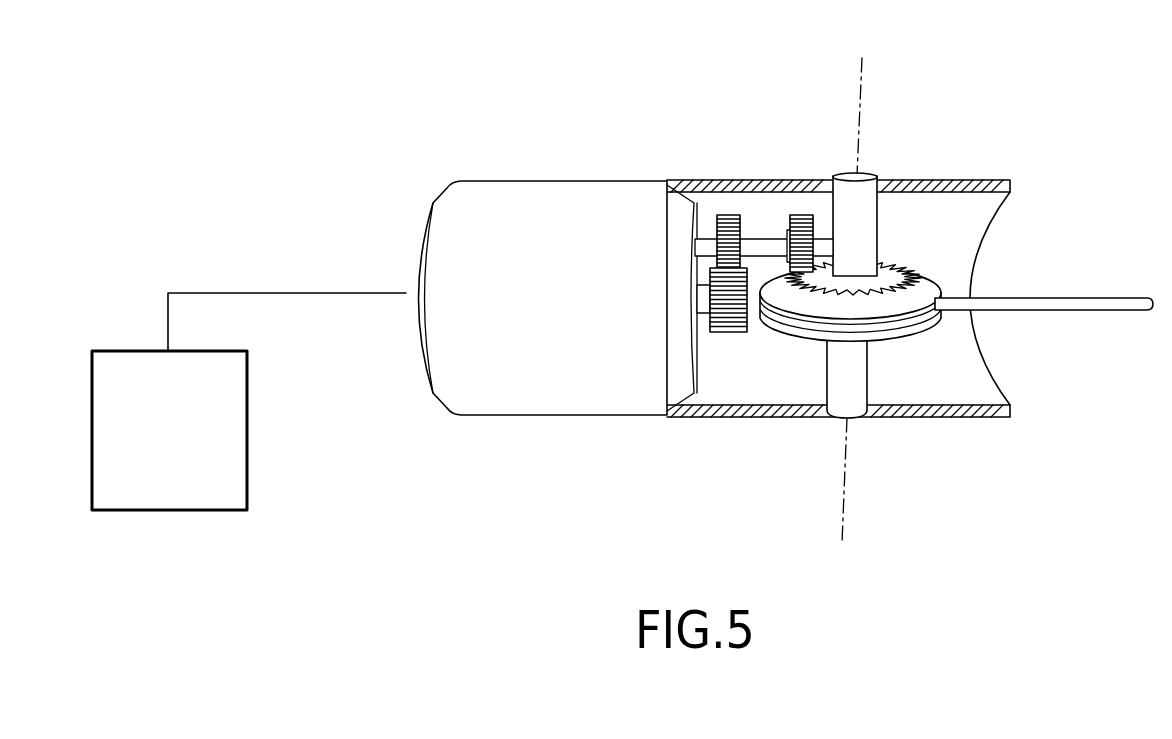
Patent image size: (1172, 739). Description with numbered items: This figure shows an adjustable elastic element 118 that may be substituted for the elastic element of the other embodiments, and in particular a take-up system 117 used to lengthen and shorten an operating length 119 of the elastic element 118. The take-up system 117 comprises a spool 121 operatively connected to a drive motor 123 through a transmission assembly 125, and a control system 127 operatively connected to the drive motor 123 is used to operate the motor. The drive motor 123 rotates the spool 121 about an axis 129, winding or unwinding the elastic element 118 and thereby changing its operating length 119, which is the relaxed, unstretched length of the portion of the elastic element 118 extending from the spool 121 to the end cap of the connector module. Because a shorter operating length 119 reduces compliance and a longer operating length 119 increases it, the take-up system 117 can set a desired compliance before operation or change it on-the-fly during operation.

The take-up system 117 is at (568, 110).
The adjustable elastic element 118 is at (1109, 324).
The operating length 119 is at (1086, 298).
The spool 121 is at (887, 346).
The drive motor 123 is at (552, 432).
The transmission assembly 125 is at (731, 215).
The control system 127 is at (247, 463).
The axis 129 is at (861, 89).